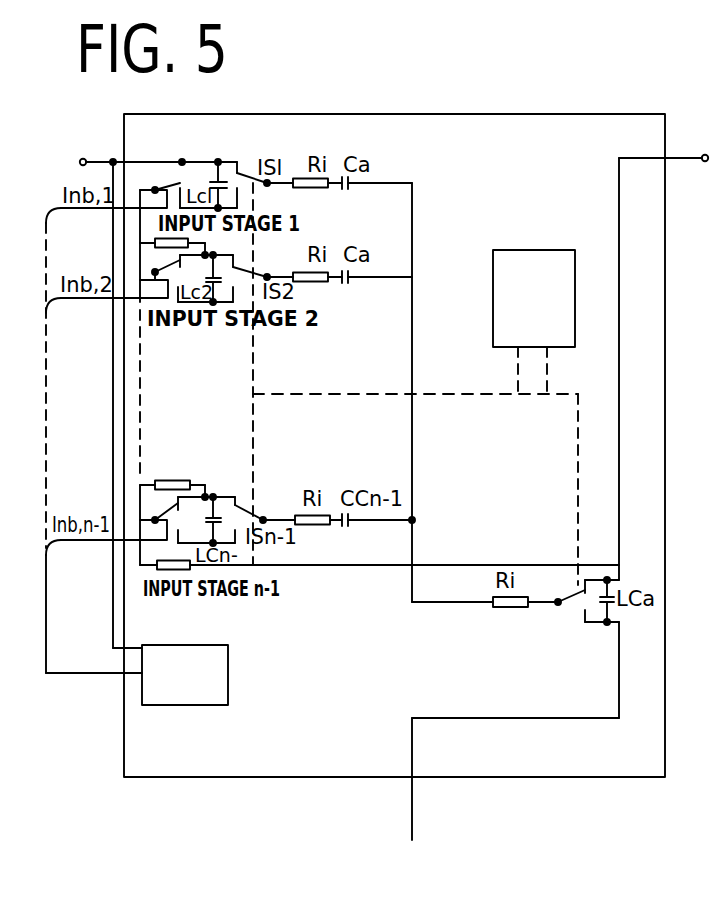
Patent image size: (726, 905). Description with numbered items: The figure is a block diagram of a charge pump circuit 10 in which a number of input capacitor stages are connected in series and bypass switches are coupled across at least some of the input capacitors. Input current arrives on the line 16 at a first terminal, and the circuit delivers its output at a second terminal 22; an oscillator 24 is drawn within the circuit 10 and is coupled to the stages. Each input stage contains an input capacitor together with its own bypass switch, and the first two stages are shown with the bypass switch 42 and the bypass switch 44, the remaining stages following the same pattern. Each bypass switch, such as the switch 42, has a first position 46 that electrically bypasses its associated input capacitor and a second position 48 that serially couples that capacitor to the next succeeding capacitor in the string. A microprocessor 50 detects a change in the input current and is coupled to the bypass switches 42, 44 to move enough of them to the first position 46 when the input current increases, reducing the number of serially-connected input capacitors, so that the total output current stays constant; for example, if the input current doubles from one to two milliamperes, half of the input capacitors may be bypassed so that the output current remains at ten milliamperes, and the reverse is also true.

The circuit 10 is at (483, 114).
The line 16 is at (84, 157).
The output terminal 22 is at (705, 155).
The oscillator 24 is at (516, 250).
The bypass switch 42 is at (166, 182).
The bypass switch 44 is at (155, 272).
The first position 46 is at (166, 180).
The second position 48 is at (182, 182).
The microprocessor 50 is at (230, 672).